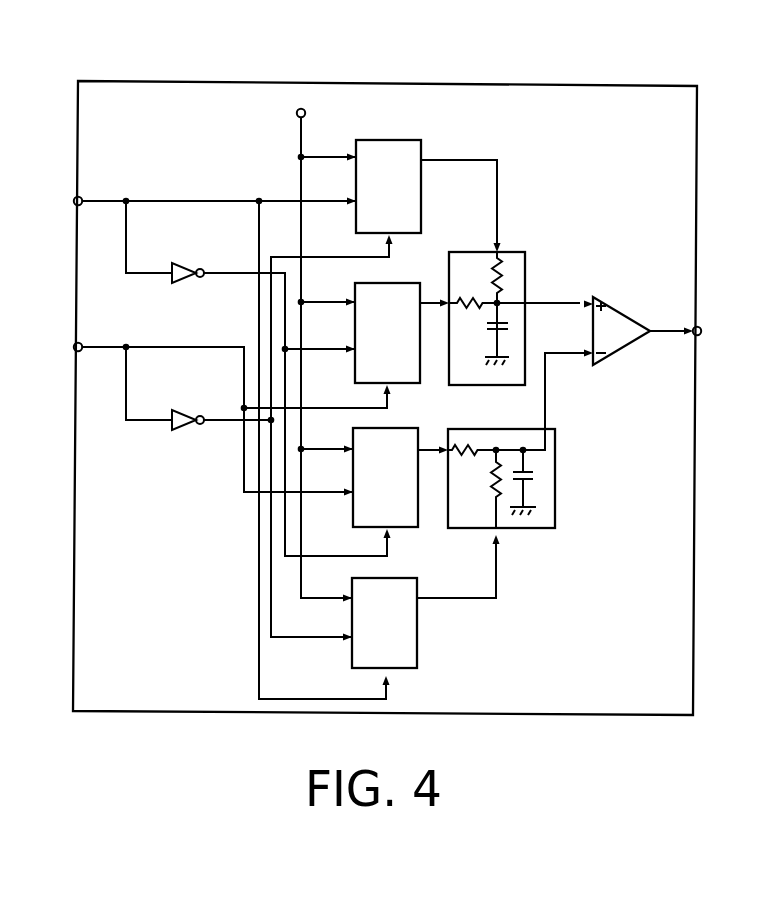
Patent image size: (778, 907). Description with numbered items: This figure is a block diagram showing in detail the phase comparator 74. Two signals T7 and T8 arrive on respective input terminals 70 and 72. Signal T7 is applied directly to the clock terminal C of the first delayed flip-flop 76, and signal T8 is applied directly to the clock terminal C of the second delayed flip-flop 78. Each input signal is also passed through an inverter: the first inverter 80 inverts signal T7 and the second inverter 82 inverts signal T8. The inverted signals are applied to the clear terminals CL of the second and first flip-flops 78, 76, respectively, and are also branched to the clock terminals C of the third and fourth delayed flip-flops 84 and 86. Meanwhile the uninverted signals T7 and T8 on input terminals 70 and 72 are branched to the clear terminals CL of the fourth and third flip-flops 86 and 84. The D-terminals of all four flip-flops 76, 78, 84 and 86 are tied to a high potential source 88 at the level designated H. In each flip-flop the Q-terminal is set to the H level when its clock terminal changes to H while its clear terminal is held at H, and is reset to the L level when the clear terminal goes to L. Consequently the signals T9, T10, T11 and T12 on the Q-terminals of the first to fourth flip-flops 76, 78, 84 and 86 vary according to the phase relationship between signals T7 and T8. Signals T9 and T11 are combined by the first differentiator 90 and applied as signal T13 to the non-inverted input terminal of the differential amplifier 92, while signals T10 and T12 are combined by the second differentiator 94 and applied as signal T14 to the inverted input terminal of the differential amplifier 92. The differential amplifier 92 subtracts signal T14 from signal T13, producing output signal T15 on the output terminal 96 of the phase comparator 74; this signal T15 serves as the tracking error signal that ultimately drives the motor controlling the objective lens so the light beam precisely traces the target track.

The phase comparator 74 is at (256, 82).
The input terminal 70 is at (74, 200).
The input terminal 72 is at (74, 347).
The first delayed flip-flop 76 is at (421, 203).
The second delayed flip-flop 78 is at (419, 508).
The first inverter 80 is at (183, 264).
The second inverter 82 is at (183, 431).
The third delayed flip-flop 84 is at (421, 367).
The fourth delayed flip-flop 86 is at (418, 637).
The high potential source 88 is at (296, 113).
The first differentiator 90 is at (517, 272).
The differential amplifier 92 is at (620, 308).
The second differentiator 94 is at (556, 507).
The output terminal 96 is at (701, 331).
The signal T7 is at (106, 199).
The signal T8 is at (97, 347).
The signal T9 is at (472, 158).
The signal T10 is at (428, 445).
The signal T11 is at (424, 301).
The signal T12 is at (440, 597).
The signal T13 is at (563, 310).
The signal T14 is at (563, 358).
The output signal T15 is at (663, 334).